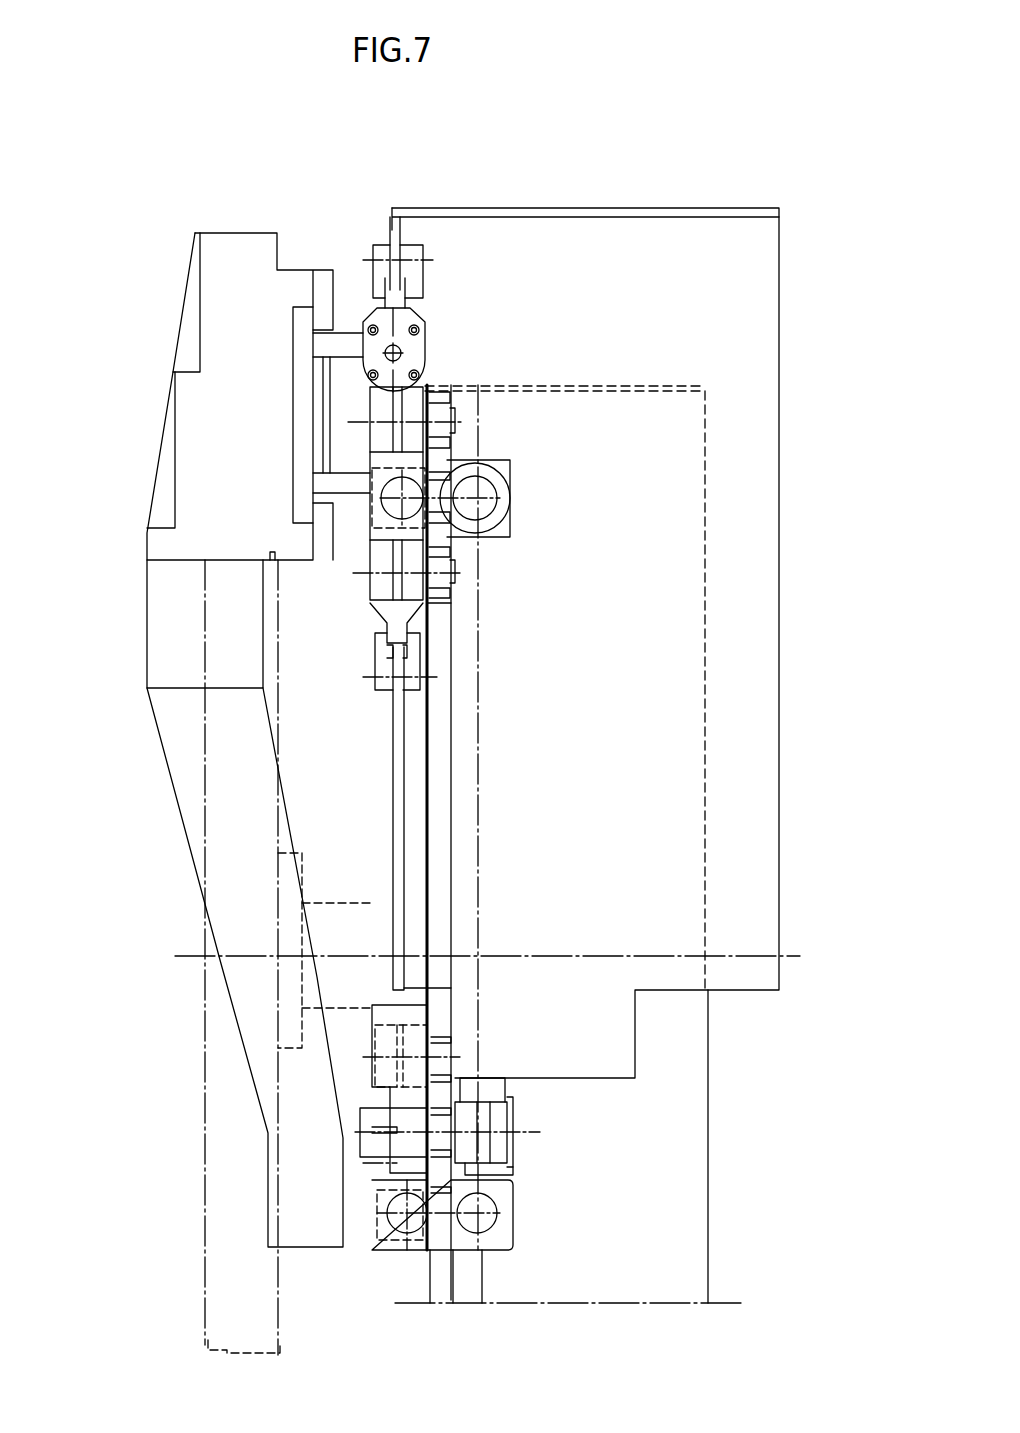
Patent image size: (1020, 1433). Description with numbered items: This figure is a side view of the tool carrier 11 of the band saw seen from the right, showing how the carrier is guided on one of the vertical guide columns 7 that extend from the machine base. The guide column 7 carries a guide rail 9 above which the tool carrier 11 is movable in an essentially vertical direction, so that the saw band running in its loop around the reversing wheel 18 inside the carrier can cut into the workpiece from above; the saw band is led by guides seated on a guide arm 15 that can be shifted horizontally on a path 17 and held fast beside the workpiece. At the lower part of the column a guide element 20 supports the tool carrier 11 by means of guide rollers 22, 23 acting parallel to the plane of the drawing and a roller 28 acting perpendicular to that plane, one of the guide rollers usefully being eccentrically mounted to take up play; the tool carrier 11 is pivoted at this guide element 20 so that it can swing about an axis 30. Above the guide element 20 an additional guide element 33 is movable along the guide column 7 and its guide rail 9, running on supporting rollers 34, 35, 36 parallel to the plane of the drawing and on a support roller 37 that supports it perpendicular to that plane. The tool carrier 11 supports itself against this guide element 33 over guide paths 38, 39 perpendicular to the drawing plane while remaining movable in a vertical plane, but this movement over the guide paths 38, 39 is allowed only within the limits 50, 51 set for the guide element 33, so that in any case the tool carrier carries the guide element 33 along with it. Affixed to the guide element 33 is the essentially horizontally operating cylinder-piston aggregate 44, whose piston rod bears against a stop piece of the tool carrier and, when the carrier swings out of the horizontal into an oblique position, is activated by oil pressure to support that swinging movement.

The guide column 7 is at (670, 1252).
The guide rail 9 is at (447, 1277).
The tool carrier 11 is at (733, 703).
The guide arm 15 is at (190, 742).
The path 17 is at (303, 421).
The reversing wheel 18 is at (243, 1288).
The guide element 20 is at (350, 1156).
The guide roller 22 is at (405, 1057).
The guide roller 23 is at (425, 1253).
The roller 28 is at (403, 1237).
The axis 30 is at (540, 1132).
The guide element 33 is at (387, 612).
The supporting roller 34 is at (473, 460).
The supporting roller 35 is at (423, 388).
The supporting roller 36 is at (437, 580).
The support roller 37 is at (387, 484).
The guide path 38 is at (413, 255).
The guide path 39 is at (412, 683).
The cylinder-piston aggregate 44 is at (378, 300).
The limit 50 is at (372, 292).
The limit 51 is at (390, 662).